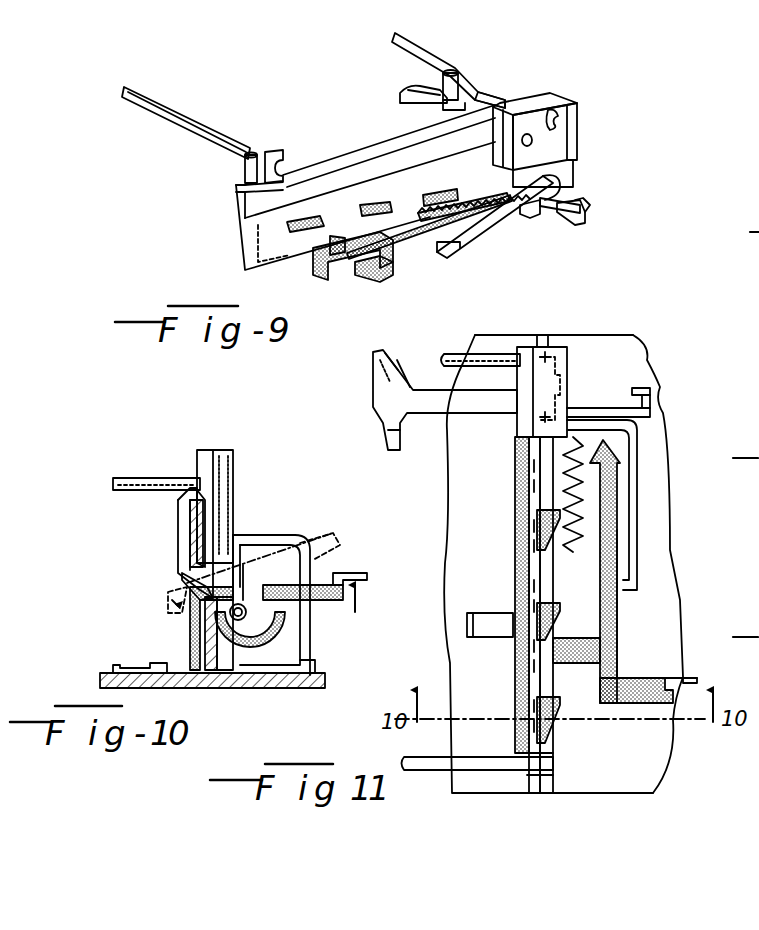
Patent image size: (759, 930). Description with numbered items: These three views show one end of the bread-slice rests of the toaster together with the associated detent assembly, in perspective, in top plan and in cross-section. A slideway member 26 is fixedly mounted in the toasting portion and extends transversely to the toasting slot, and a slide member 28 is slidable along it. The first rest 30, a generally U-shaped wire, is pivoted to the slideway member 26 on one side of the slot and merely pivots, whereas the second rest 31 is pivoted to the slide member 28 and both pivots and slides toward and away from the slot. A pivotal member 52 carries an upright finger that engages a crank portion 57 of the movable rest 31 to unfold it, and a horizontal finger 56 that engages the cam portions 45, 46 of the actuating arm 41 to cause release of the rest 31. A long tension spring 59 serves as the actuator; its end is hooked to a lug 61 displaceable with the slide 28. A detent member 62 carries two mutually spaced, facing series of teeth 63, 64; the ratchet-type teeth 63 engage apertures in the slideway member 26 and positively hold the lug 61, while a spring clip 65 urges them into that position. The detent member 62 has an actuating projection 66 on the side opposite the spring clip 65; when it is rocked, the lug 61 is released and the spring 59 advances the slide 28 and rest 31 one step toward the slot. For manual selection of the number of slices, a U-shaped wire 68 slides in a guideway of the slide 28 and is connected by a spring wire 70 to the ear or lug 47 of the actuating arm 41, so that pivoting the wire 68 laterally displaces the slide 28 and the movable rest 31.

In FIG. 9, the slideway member 26 is at (262, 206).
In FIG. 10, the slideway member 26 is at (195, 543).
In FIG. 11, the slideway member 26 is at (532, 482).
In FIG. 9, the slide member 28 is at (553, 143).
In FIG. 10, the slide member 28 is at (205, 470).
In FIG. 11, the slide member 28 is at (545, 352).
In FIG. 9, the first rest 30 is at (174, 112).
In FIG. 11, the first rest 30 is at (487, 762).
In FIG. 9, the second rest 31 is at (440, 53).
In FIG. 10, the second rest 31 is at (125, 480).
In FIG. 11, the second rest 31 is at (456, 355).
In FIG. 9, the actuating arm 41 is at (553, 198).
In FIG. 11, the actuating arm 41 is at (390, 398).
In FIG. 11, the cam portion 45 is at (398, 368).
In FIG. 11, the cam portion 46 is at (392, 448).
In FIG. 9, the ear or lug 47 is at (590, 207).
In FIG. 11, the ear or lug 47 is at (650, 390).
In FIG. 9, the pivotal member 52 is at (397, 100).
In FIG. 9, the horizontal finger 56 is at (463, 110).
In FIG. 9, the crank portion 57 is at (490, 97).
In FIG. 9, the tension spring 59 is at (440, 230).
In FIG. 10, the tension spring 59 is at (270, 620).
In FIG. 11, the tension spring 59 is at (580, 443).
In FIG. 9, the lug 61 is at (560, 175).
In FIG. 9, the detent member 62 is at (325, 262).
In FIG. 10, the detent member 62 is at (192, 618).
In FIG. 11, the detent member 62 is at (515, 553).
In FIG. 9, the ratchet teeth 63 is at (403, 205).
In FIG. 11, the ratchet teeth 63 is at (540, 515).
In FIG. 11, the teeth 64 is at (613, 477).
In FIG. 10, the spring clip 65 is at (157, 663).
In FIG. 11, the spring clip 65 is at (487, 618).
In FIG. 9, the actuating projection 66 is at (375, 280).
In FIG. 10, the actuating projection 66 is at (358, 572).
In FIG. 11, the actuating projection 66 is at (690, 678).
In FIG. 9, the U shape wire 68 is at (478, 245).
In FIG. 11, the U shape wire 68 is at (640, 560).
In FIG. 9, the spring wire 70 is at (537, 217).
In FIG. 11, the spring wire 70 is at (652, 412).